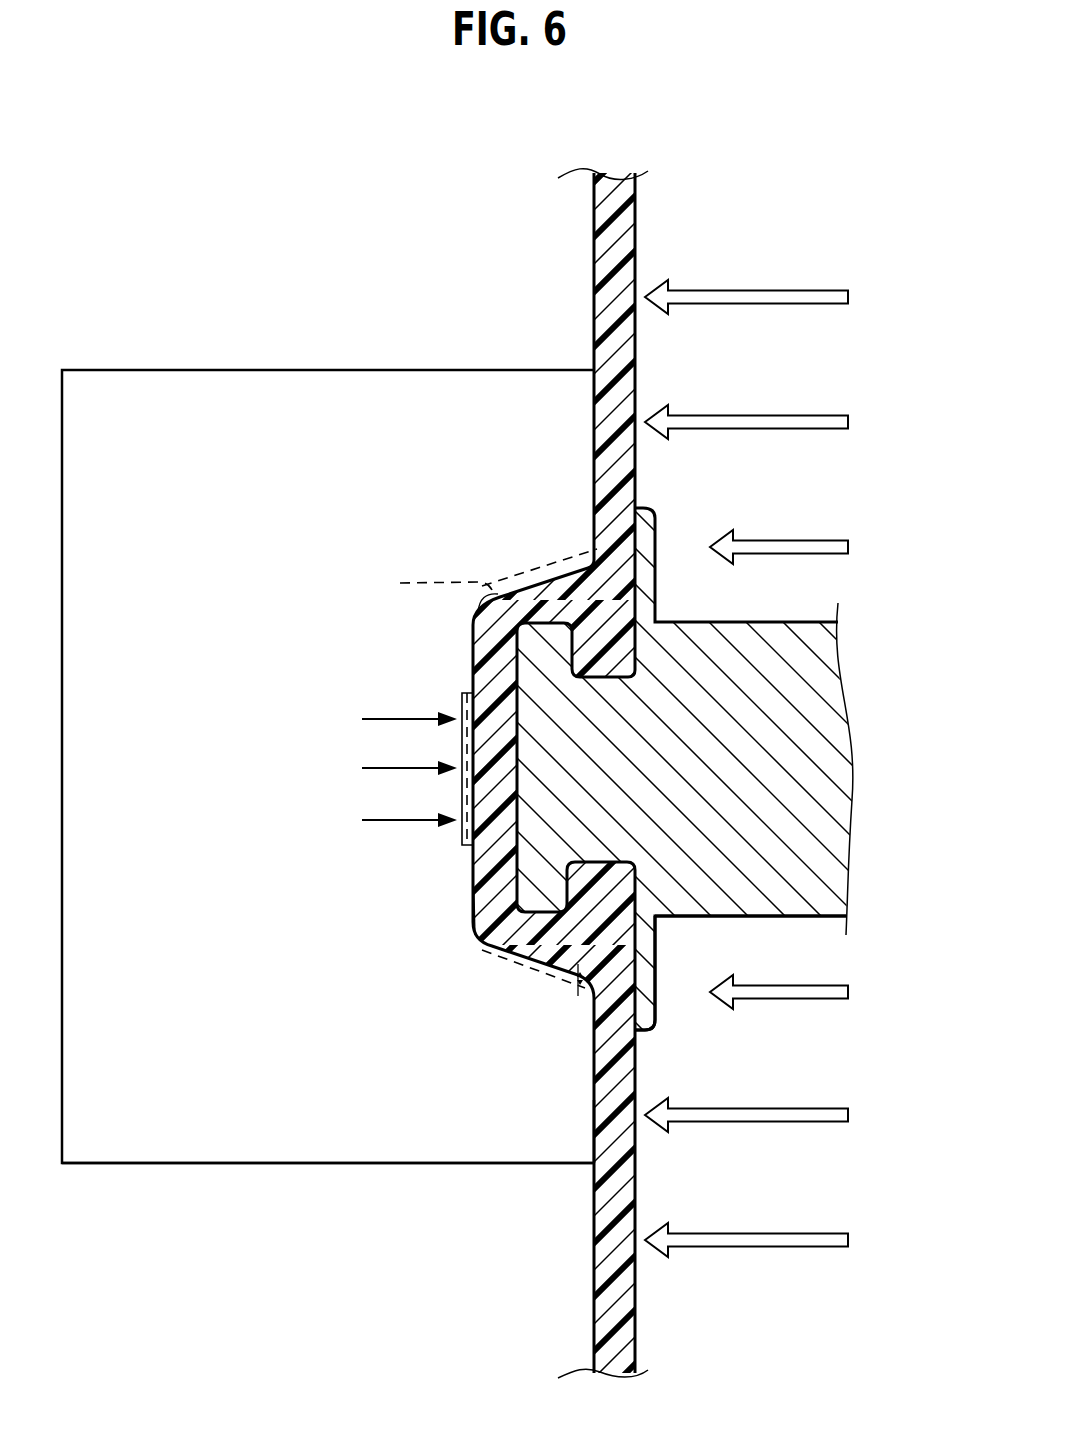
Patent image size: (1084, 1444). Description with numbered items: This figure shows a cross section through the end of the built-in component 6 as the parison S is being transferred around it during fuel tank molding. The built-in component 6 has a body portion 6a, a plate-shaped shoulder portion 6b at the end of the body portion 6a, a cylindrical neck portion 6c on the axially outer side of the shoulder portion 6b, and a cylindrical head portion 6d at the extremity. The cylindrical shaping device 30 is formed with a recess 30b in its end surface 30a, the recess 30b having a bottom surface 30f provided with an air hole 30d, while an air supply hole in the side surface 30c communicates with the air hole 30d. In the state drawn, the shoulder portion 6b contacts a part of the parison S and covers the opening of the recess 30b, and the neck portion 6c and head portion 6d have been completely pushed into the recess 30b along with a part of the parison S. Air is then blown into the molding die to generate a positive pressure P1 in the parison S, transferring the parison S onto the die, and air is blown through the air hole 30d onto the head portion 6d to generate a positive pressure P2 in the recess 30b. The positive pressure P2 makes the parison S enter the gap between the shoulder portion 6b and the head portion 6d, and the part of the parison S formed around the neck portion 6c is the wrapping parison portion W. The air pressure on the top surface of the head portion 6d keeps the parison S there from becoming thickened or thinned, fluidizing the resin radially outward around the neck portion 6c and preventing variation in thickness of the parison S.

The parison S is at (624, 228).
The shaping device 30 is at (198, 368).
The end surface 30a is at (597, 1100).
The recess 30b is at (545, 556).
The side surface 30c is at (195, 1165).
The air hole 30d is at (462, 700).
The bottom surface 30f is at (400, 583).
The built-in component 6 is at (798, 602).
The body portion 6a is at (805, 920).
The shoulder portion 6b is at (650, 1032).
The neck portion 6c is at (580, 930).
The head portion 6d is at (498, 938).
The positive pressure P1 is at (780, 304).
The positive pressure P2 is at (380, 718).
The wrapping parison portion W is at (578, 992).